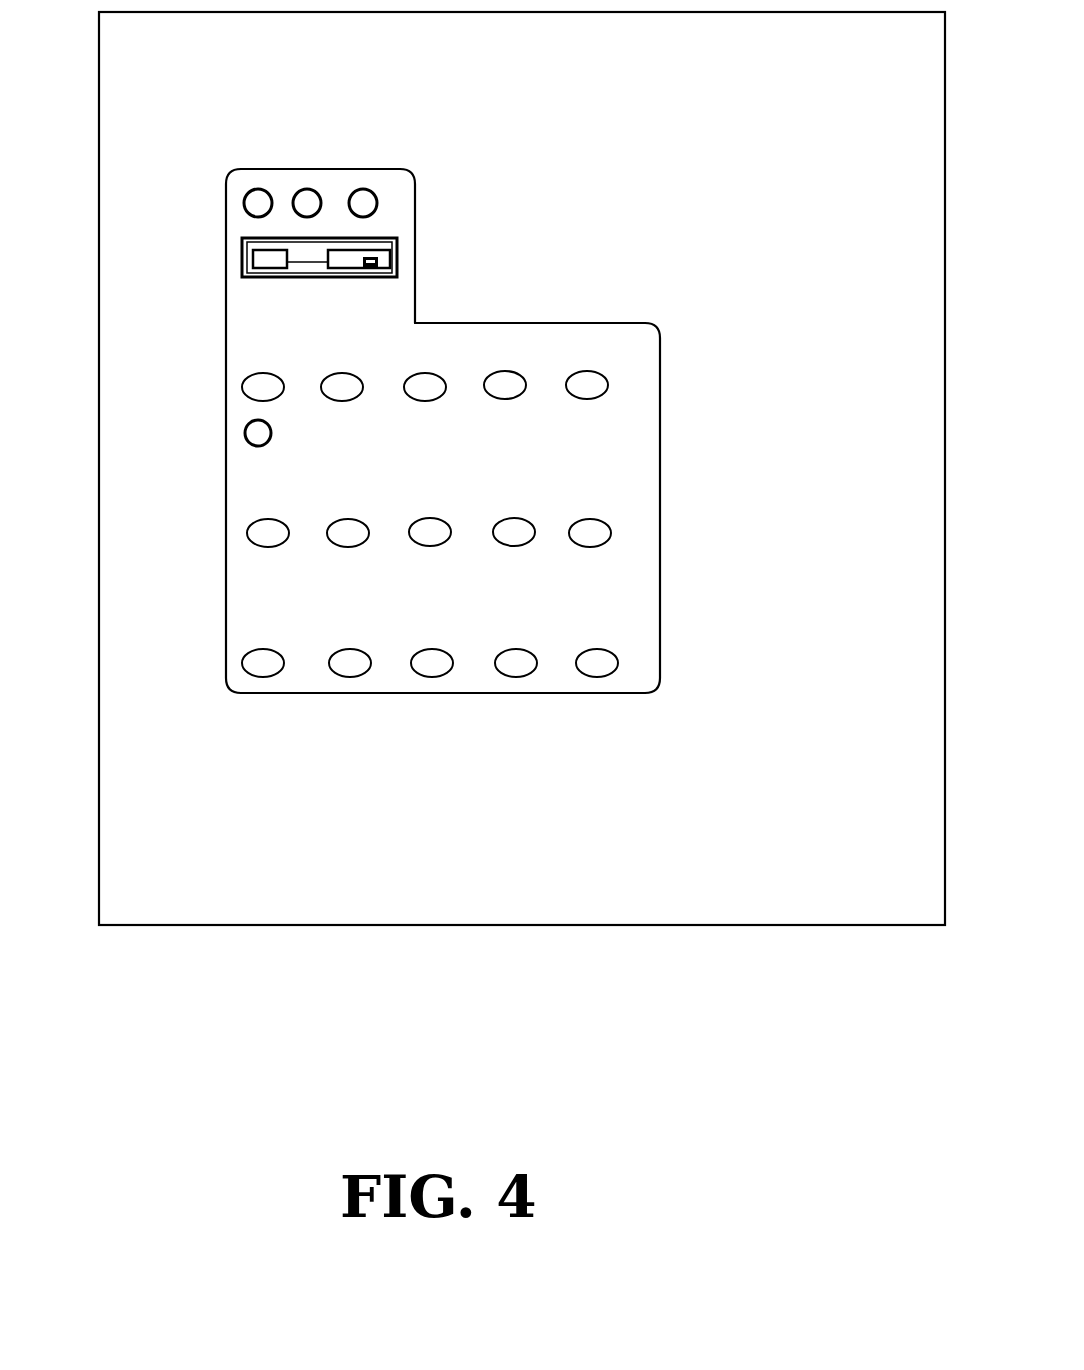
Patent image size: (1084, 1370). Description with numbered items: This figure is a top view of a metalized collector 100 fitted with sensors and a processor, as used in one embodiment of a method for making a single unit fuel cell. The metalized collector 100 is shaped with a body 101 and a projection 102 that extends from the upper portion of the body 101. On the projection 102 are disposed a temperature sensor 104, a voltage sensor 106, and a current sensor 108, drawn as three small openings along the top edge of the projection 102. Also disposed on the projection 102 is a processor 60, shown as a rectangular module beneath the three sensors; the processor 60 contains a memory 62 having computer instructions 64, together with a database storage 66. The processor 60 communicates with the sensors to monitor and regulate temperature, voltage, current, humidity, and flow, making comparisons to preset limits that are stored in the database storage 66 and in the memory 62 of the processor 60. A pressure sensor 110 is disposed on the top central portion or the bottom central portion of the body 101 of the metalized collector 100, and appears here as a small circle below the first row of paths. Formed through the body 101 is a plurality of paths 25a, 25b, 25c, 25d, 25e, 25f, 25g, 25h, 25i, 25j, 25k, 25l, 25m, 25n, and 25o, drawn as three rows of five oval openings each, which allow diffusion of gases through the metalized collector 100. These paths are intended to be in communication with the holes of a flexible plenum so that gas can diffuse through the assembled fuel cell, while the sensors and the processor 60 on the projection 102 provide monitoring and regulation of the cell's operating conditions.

The metalized collector 100 is at (648, 925).
The body 101 is at (465, 460).
The projection 102 is at (395, 190).
The temperature sensor 104 is at (255, 202).
The voltage sensor 106 is at (307, 203).
The current sensor 108 is at (363, 203).
The pressure sensor 110 is at (255, 437).
The processor 60 is at (308, 246).
The memory 62 is at (347, 258).
The computer instructions 64 is at (363, 261).
The database storage 66 is at (268, 258).
The path 25a is at (257, 388).
The path 25b is at (342, 387).
The path 25c is at (425, 387).
The path 25d is at (505, 385).
The path 25e is at (587, 385).
The path 25f is at (262, 537).
The path 25g is at (343, 533).
The path 25h is at (425, 527).
The path 25i is at (512, 535).
The path 25j is at (592, 535).
The path 25k is at (260, 670).
The path 25l is at (345, 670).
The path 25m is at (425, 665).
The path 25n is at (513, 670).
The path 25o is at (593, 668).